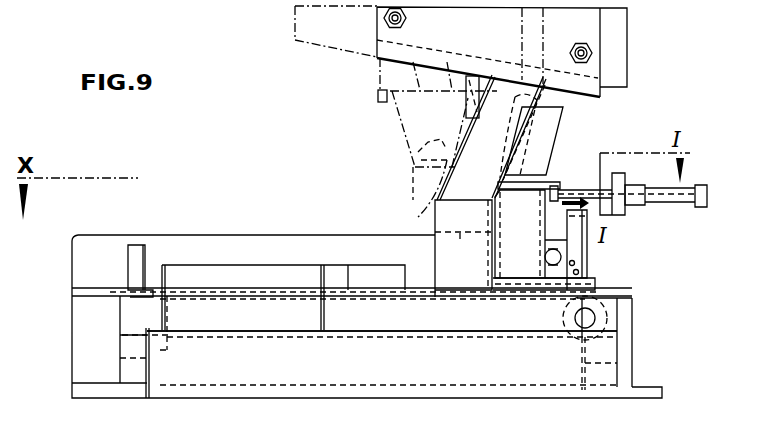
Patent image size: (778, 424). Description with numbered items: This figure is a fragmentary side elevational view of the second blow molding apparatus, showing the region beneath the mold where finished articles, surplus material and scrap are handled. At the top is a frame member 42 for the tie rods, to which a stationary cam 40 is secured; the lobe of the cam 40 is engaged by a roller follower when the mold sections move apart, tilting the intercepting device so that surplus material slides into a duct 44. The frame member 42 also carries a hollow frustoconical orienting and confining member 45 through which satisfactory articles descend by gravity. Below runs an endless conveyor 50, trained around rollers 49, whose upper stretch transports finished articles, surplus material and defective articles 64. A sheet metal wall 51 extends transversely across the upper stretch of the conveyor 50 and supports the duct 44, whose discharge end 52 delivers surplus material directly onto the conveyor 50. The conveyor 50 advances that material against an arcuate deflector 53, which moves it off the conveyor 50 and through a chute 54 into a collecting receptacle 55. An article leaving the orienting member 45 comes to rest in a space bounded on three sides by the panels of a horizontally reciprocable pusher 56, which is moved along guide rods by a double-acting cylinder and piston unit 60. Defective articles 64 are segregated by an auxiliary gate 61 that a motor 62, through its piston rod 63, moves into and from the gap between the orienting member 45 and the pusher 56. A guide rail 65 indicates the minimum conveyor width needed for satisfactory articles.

The stationary cam 40 is at (380, 92).
The frame member 42 is at (484, 41).
The duct 44 is at (457, 188).
The orienting and confining member 45 is at (541, 142).
The rollers 49 is at (573, 332).
The conveyor 50 is at (430, 300).
The sheet metal wall 51 is at (495, 252).
The discharge end of the duct 52 is at (463, 248).
The arcuate deflector 53 is at (217, 272).
The chute 54 is at (188, 312).
The collecting receptacle 55 is at (477, 373).
The pusher 56 is at (531, 226).
The cylinder and piston unit 60 is at (562, 257).
The gate 61 is at (560, 184).
The motor 62 is at (678, 192).
The piston rod 63 is at (603, 188).
The defective articles 64 is at (545, 120).
The guide rail 65 is at (272, 252).